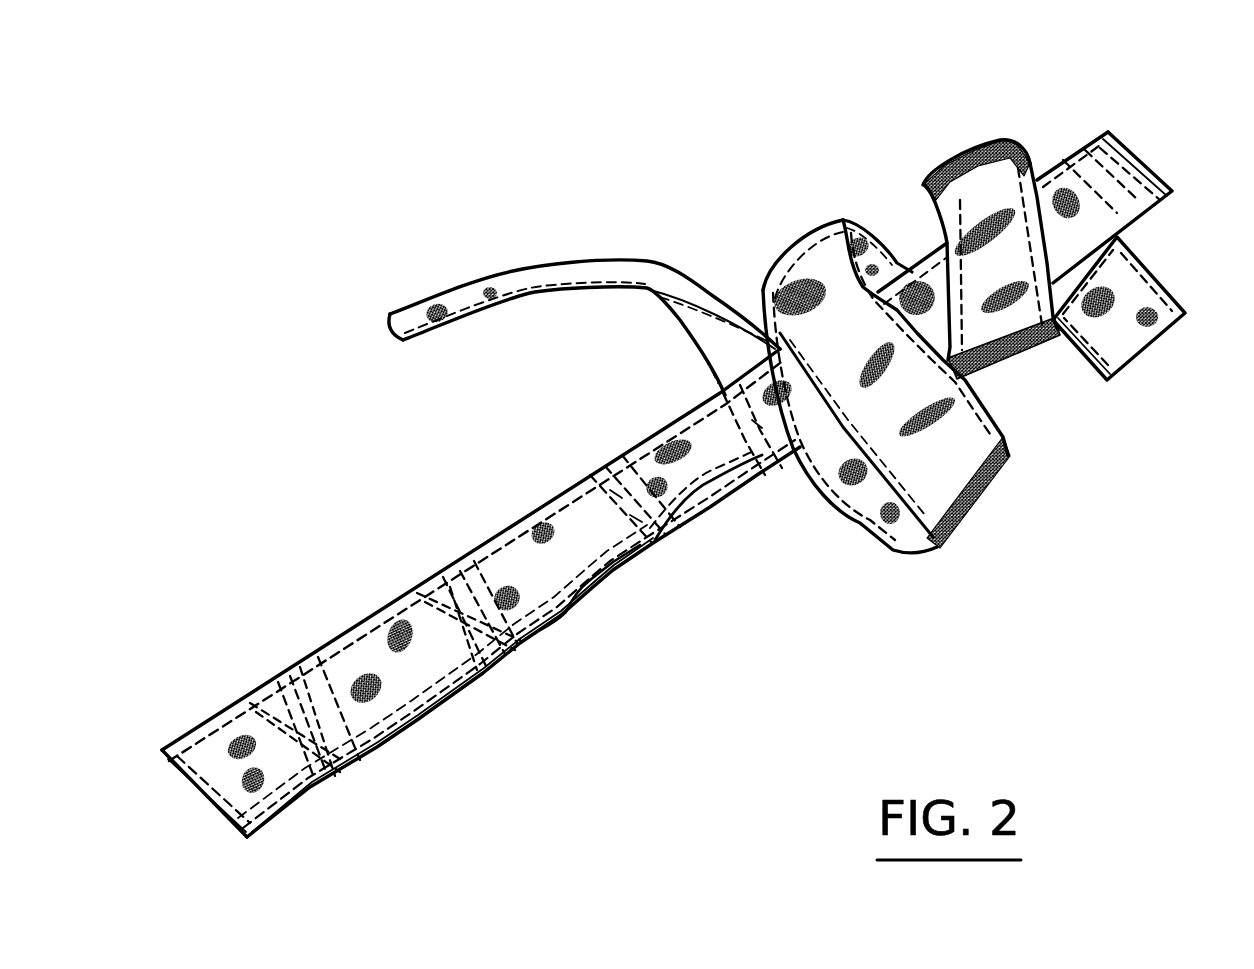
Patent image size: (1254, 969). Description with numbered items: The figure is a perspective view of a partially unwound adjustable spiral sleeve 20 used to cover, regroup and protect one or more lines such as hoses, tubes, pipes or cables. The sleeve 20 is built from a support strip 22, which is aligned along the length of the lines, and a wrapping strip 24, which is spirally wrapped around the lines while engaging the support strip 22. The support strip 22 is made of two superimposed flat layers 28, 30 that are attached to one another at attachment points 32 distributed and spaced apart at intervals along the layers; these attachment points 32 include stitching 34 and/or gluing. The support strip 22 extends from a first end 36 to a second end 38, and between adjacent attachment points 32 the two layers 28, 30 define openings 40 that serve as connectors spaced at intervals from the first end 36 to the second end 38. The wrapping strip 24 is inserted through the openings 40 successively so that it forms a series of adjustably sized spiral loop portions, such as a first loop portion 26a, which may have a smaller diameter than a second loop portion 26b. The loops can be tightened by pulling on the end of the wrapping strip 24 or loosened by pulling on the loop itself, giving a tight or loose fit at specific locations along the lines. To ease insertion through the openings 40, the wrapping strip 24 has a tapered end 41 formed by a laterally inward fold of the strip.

The adjustable spiral sleeve 20 is at (541, 141).
The support strip 22 is at (347, 616).
The wrapping strip 24 is at (1162, 357).
The first loop portion 26a is at (983, 187).
The second loop portion 26b is at (813, 283).
The flat layer 28 is at (583, 577).
The flat layer 30 is at (573, 603).
The attachment points 32 is at (359, 793).
The stitching 34 is at (312, 738).
The first end 36 is at (1153, 137).
The second end 38 is at (186, 821).
The openings 40 is at (727, 517).
The tapered end 41 is at (465, 334).